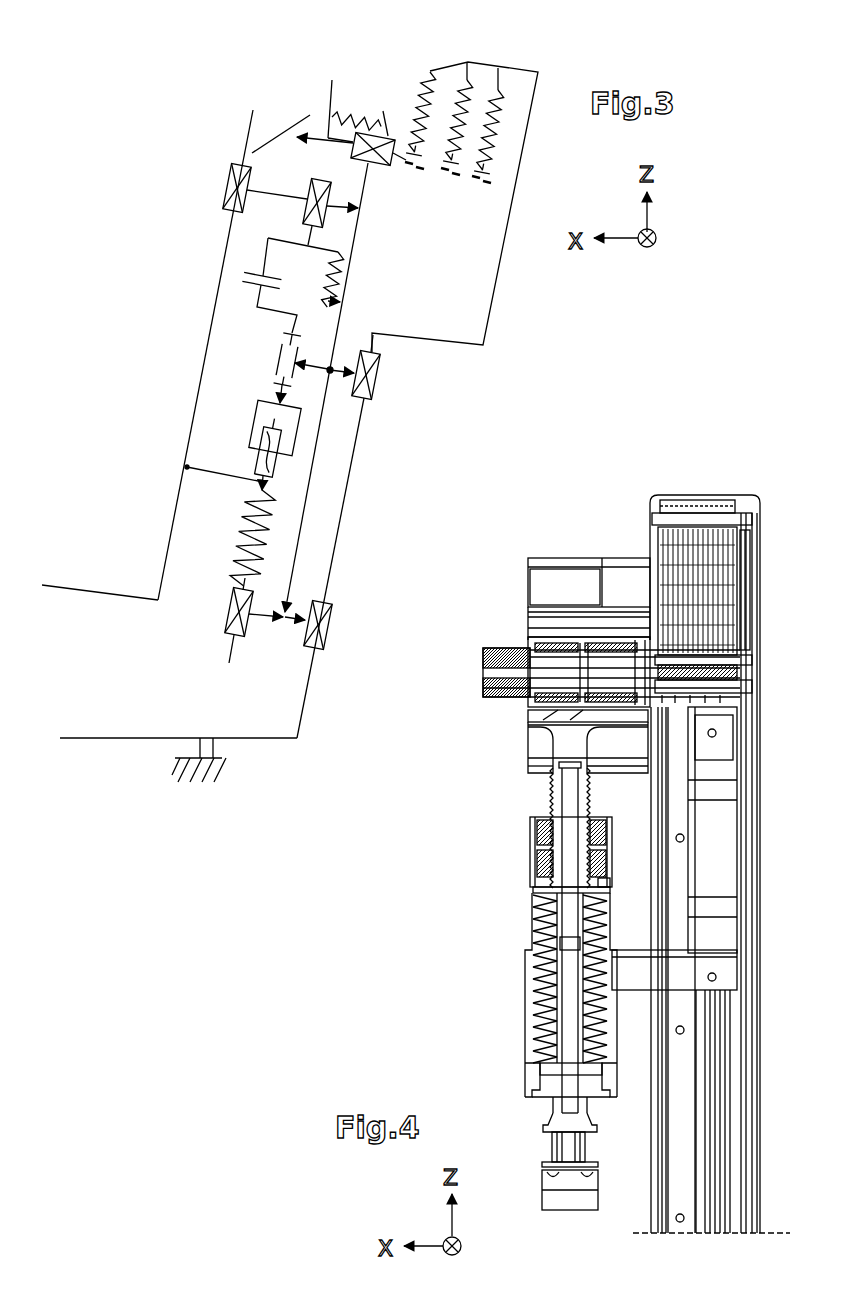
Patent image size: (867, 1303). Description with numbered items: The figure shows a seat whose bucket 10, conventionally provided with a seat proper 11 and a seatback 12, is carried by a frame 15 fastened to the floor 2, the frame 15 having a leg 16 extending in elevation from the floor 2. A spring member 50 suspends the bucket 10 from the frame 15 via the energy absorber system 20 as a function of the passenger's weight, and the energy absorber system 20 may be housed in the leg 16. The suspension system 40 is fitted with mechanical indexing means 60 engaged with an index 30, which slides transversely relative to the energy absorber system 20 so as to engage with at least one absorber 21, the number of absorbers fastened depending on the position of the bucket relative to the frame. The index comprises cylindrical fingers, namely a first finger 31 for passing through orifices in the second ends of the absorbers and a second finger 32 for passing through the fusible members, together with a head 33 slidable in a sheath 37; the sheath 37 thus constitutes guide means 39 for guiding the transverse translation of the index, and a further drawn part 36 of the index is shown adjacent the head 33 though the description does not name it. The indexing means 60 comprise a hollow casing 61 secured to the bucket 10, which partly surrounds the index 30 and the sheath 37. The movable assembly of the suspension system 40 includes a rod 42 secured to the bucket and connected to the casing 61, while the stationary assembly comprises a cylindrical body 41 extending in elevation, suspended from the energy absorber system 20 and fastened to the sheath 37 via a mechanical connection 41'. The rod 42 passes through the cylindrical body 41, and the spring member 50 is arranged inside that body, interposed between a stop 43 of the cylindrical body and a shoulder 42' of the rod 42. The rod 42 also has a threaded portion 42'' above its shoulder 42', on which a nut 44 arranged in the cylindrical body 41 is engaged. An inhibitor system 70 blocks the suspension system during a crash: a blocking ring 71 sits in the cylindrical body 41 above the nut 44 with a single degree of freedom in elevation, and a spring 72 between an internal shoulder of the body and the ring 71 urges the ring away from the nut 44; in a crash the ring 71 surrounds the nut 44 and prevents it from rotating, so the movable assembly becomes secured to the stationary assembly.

In FIG. 3, the floor 2 is at (214, 737).
In FIG. 3, the bucket 10 is at (144, 320).
In FIG. 3, the seat proper 11 is at (102, 597).
In FIG. 3, the seatback 12 is at (190, 422).
In FIG. 3, the frame 15 is at (311, 663).
In FIG. 4, the leg 16 is at (756, 1175).
In FIG. 3, the energy absorber system 20 is at (404, 90).
In FIG. 4, the energy absorber system 20 is at (714, 545).
In FIG. 3, the absorber 21 is at (432, 68).
In FIG. 3, the index 30 is at (428, 172).
In FIG. 4, the index 30 is at (526, 640).
In FIG. 4, the first finger 31 is at (722, 640).
In FIG. 4, the second finger 32 is at (714, 706).
In FIG. 3, the head 33 is at (332, 88).
In FIG. 4, the head 33 is at (588, 640).
In FIG. 3, the piston 36 is at (365, 106).
In FIG. 4, the piston 36 is at (487, 660).
In FIG. 4, the sheath 37 is at (752, 657).
In FIG. 4, the guide means 39 is at (652, 628).
In FIG. 3, the suspension system 40 is at (142, 628).
In FIG. 4, the suspension system 40 is at (477, 945).
In FIG. 4, the cylindrical body 41 is at (538, 995).
In FIG. 4, the mechanical connection 41' is at (721, 848).
In FIG. 4, the rod 42 is at (537, 1127).
In FIG. 4, the shoulder 42' is at (536, 905).
In FIG. 4, the threaded portion 42'' is at (687, 937).
In FIG. 3, the stop 43 is at (218, 616).
In FIG. 4, the stop 43 is at (600, 1105).
In FIG. 4, the nut 44 is at (607, 872).
In FIG. 3, the spring member 50 is at (220, 540).
In FIG. 4, the spring member 50 is at (533, 983).
In FIG. 3, the indexing means 60 is at (277, 106).
In FIG. 4, the indexing means 60 is at (512, 752).
In FIG. 4, the casing 61 is at (528, 728).
In FIG. 4, the inhibitor system 70 is at (515, 826).
In FIG. 4, the blocking ring 71 is at (548, 828).
In FIG. 4, the spring 72 is at (540, 843).